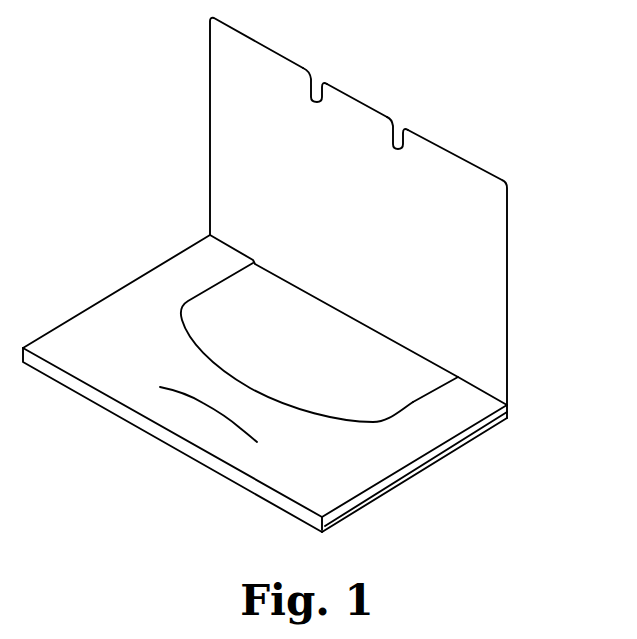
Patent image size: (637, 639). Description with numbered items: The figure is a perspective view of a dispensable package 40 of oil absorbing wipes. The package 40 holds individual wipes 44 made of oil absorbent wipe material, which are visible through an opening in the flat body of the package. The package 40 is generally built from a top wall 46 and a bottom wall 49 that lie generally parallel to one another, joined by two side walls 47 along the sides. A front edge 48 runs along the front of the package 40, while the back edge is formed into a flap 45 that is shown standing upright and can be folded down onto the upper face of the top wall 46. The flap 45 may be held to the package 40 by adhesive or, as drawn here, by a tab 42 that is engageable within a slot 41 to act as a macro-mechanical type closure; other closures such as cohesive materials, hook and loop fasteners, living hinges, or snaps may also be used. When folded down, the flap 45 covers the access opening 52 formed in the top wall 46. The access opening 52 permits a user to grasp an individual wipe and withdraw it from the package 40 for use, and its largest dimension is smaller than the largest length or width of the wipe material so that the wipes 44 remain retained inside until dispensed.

The dispensable package 40 is at (134, 159).
The slot 41 is at (203, 400).
The tab 42 is at (362, 113).
The individual wipes 44 is at (362, 342).
The flap 45 is at (497, 270).
The top wall 46 is at (295, 492).
The side walls 47 is at (118, 290).
The front edge 48 is at (205, 462).
The bottom wall 49 is at (338, 523).
The access opening 52 is at (395, 402).